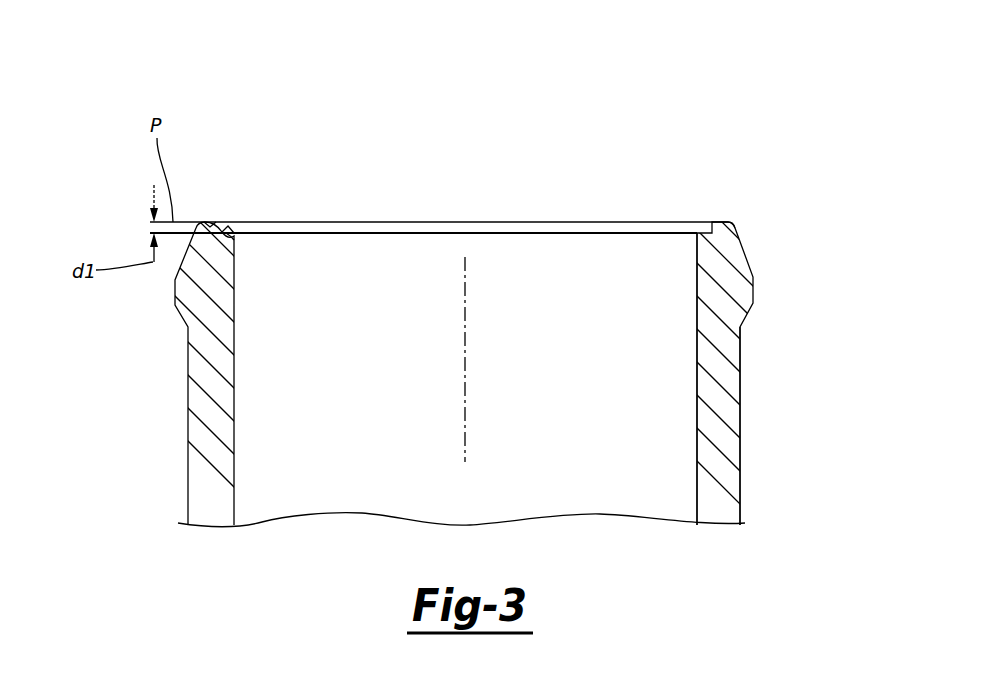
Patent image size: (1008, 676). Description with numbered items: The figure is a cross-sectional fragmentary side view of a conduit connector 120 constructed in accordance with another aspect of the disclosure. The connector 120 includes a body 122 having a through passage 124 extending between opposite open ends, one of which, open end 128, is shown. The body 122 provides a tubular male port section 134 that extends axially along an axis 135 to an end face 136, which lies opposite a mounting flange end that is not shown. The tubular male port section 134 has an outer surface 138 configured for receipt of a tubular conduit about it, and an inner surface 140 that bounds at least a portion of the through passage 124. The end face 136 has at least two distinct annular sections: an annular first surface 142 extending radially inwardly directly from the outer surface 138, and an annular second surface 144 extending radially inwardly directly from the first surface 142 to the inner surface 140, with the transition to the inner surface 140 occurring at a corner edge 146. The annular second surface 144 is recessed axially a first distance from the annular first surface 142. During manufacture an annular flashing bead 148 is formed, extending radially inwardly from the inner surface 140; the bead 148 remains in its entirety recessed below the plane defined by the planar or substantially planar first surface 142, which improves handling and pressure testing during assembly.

The connector 120 is at (768, 261).
The body 122 is at (731, 365).
The through passage 124 is at (480, 268).
The open end 128 is at (720, 222).
The tubular male port section 134 is at (150, 351).
The axis 135 is at (463, 388).
The end face 136 is at (703, 210).
The outer surface 138 is at (752, 382).
The inner surface 140 is at (685, 382).
The annular first surface 142 is at (210, 208).
The annular second surface 144 is at (231, 212).
The corner edge 146 is at (237, 236).
The bead 148 is at (362, 232).